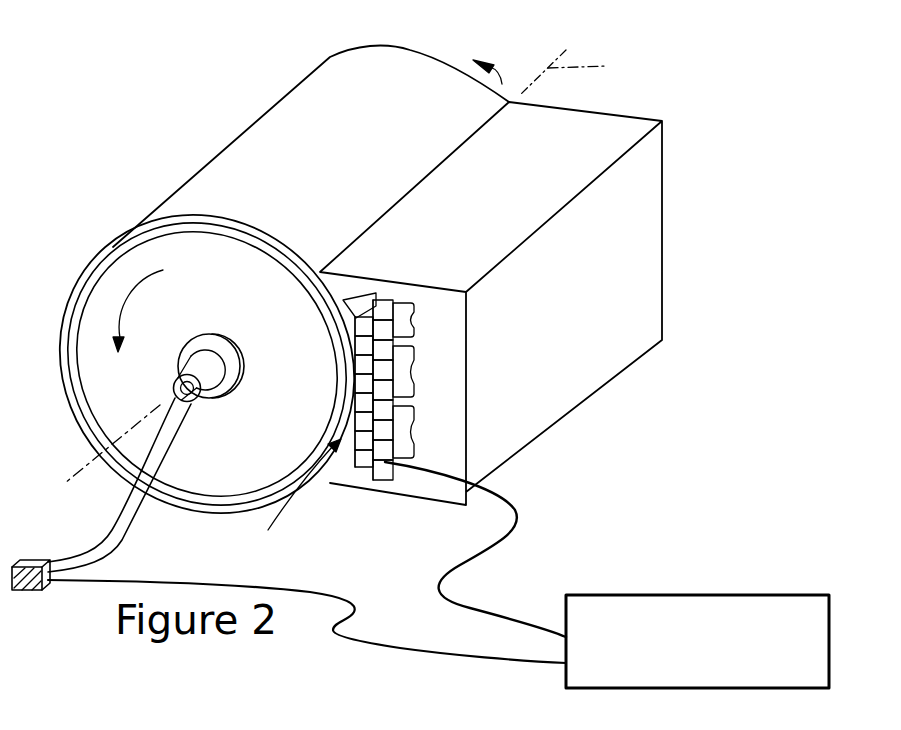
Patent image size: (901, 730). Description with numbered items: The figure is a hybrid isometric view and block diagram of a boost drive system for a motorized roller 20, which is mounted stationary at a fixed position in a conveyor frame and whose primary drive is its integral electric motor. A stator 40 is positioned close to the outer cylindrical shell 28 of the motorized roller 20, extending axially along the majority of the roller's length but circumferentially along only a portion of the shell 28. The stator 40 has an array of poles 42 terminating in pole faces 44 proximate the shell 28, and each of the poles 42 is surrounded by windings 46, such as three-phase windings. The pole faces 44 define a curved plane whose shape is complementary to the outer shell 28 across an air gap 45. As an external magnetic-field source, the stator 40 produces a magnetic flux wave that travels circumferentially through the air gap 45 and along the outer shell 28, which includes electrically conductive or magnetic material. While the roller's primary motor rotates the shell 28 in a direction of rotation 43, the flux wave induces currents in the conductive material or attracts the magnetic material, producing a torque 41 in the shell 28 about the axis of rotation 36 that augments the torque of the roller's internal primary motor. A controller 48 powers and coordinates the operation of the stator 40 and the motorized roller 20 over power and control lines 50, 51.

The motorized roller 20 is at (101, 304).
The outer cylindrical shell 28 is at (352, 64).
The axis of rotation 36 is at (353, 266).
The stator 40 is at (600, 383).
The torque 41 is at (497, 72).
The poles 42 is at (348, 468).
The direction of rotation 43 is at (138, 288).
The pole faces 44 is at (342, 308).
The air gap 45 is at (302, 499).
The windings 46 is at (390, 470).
The controller 48 is at (655, 596).
The power and control lines 50 is at (478, 548).
The power and control lines 51 is at (428, 650).